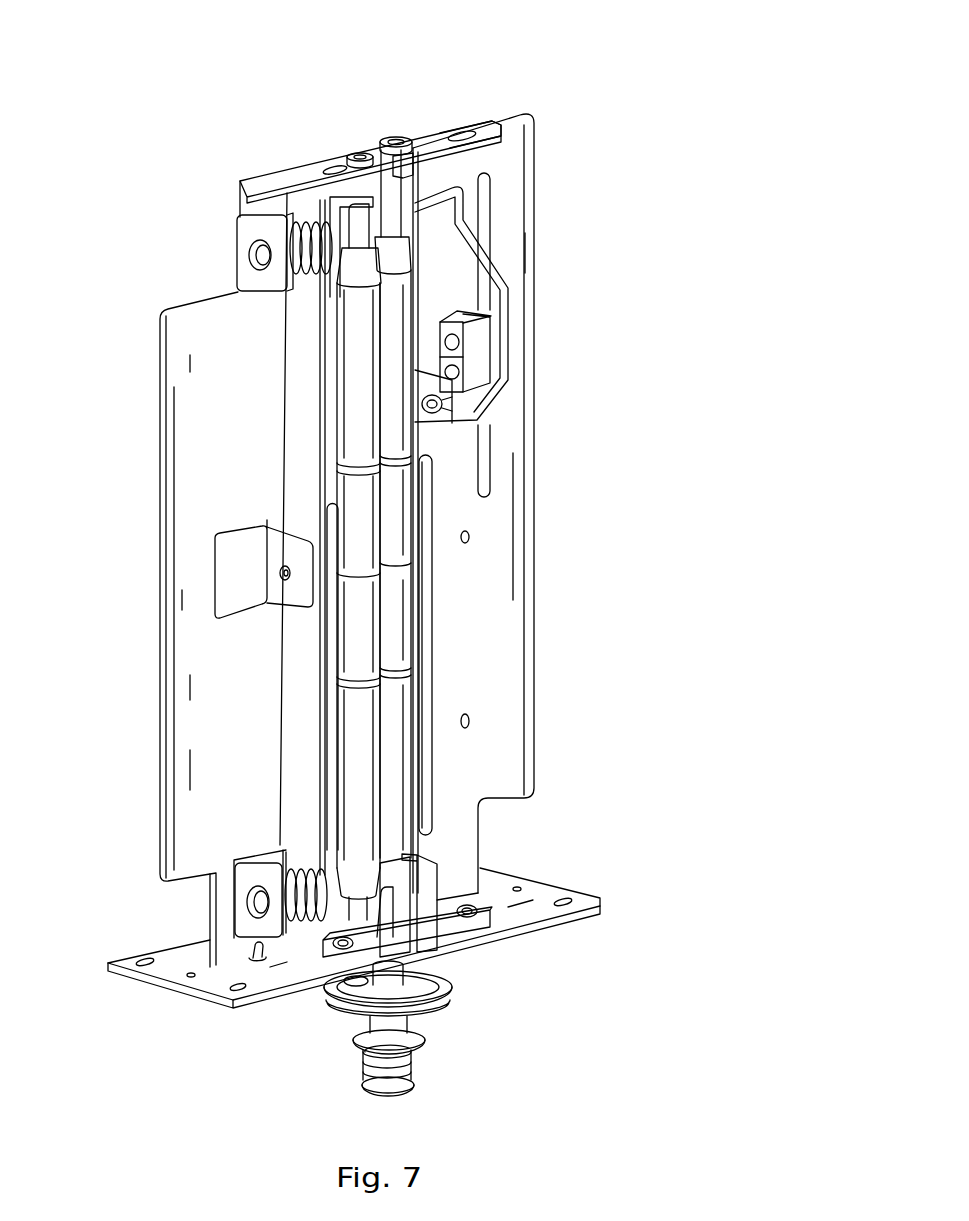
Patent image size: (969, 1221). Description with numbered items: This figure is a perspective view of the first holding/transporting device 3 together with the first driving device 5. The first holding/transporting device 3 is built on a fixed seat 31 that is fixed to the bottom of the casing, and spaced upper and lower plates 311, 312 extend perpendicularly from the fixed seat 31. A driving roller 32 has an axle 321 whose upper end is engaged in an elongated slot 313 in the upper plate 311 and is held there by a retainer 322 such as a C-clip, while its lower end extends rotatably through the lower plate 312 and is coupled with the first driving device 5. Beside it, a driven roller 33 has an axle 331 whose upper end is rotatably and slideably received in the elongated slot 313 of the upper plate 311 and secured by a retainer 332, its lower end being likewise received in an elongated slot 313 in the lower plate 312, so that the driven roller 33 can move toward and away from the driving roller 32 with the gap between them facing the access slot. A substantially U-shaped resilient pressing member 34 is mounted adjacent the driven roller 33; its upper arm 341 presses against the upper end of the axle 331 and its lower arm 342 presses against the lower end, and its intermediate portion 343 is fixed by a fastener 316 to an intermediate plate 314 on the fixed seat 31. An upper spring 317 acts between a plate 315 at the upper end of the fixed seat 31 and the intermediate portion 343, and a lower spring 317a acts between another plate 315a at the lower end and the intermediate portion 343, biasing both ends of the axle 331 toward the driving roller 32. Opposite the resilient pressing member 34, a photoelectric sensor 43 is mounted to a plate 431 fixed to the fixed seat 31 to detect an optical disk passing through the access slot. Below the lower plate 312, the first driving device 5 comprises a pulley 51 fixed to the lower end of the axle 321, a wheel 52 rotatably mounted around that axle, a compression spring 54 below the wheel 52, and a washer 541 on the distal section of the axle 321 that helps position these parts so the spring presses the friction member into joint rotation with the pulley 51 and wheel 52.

The first holding/transporting device 3 is at (350, 551).
The fixed seat 31 is at (515, 610).
The upper plate 311 is at (433, 132).
The lower plate 312 is at (543, 890).
The elongated slot 313 is at (380, 138).
The intermediate plate 314 is at (290, 593).
The plate 315 is at (245, 237).
The another plate 315a is at (243, 885).
The fastener 316 is at (285, 575).
The upper spring 317 is at (290, 215).
The lower spring 317a is at (278, 876).
The driving roller 32 is at (498, 494).
The axle 321 is at (390, 203).
The retainer 322 is at (402, 139).
The driven roller 33 is at (243, 532).
The axle 331 is at (347, 200).
The retainer 332 is at (347, 157).
The resilient pressing member 34 is at (220, 543).
The upper arm 341 is at (358, 233).
The lower arm 342 is at (353, 927).
The intermediate portion 343 is at (308, 662).
The photoelectric sensor 43 is at (456, 340).
The plate 431 is at (478, 258).
The first driving device 5 is at (379, 1040).
The pulley 51 is at (447, 983).
The wheel 52 is at (413, 1047).
The compression spring 54 is at (368, 1060).
The washer 541 is at (405, 1093).